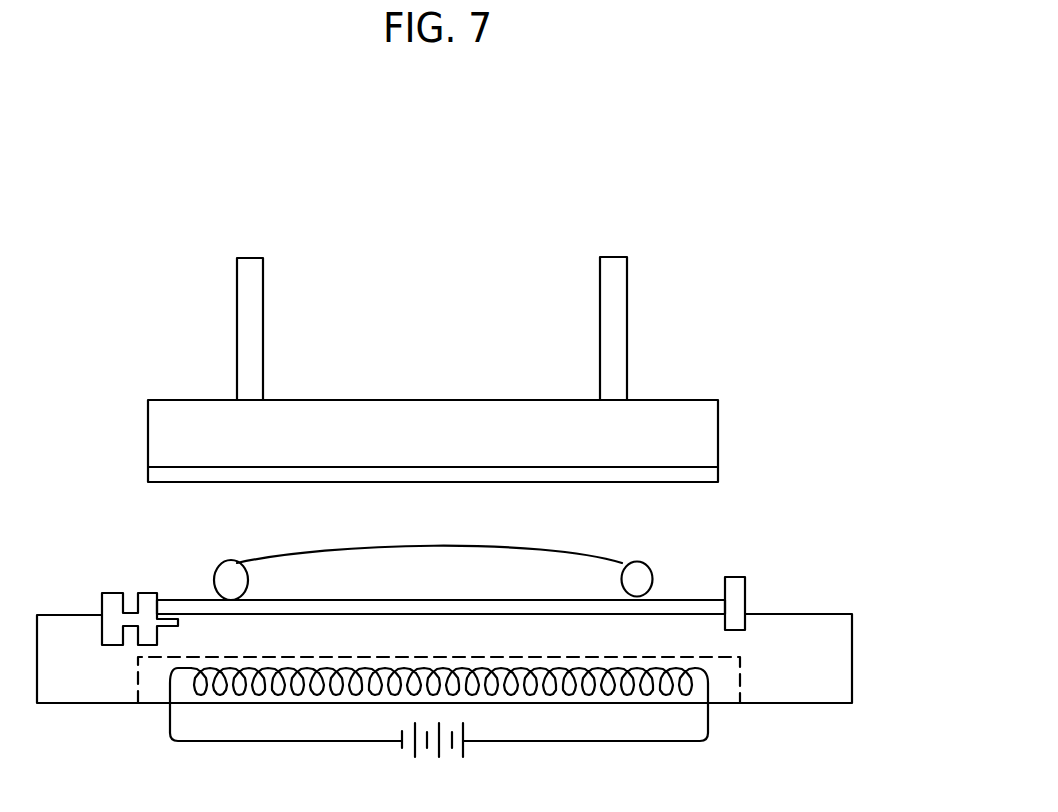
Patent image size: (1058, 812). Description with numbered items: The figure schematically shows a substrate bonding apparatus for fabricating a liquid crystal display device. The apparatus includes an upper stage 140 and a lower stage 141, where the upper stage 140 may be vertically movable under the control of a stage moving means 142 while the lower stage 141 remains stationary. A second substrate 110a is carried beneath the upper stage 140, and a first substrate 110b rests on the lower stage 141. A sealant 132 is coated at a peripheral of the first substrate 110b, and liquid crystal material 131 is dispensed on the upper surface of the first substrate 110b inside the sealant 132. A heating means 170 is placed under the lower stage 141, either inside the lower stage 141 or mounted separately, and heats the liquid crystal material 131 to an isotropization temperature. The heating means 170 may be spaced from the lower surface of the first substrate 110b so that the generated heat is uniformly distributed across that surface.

The stage moving means 142 is at (620, 320).
The upper stage 140 is at (706, 428).
The second substrate 110a is at (706, 477).
The liquid crystal material 131 is at (519, 558).
The sealant 132 is at (638, 572).
The first substrate 110b is at (680, 606).
The lower stage 141 is at (835, 655).
The heating means 170 is at (708, 720).